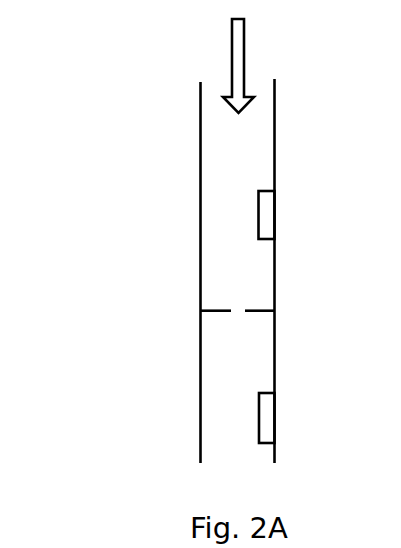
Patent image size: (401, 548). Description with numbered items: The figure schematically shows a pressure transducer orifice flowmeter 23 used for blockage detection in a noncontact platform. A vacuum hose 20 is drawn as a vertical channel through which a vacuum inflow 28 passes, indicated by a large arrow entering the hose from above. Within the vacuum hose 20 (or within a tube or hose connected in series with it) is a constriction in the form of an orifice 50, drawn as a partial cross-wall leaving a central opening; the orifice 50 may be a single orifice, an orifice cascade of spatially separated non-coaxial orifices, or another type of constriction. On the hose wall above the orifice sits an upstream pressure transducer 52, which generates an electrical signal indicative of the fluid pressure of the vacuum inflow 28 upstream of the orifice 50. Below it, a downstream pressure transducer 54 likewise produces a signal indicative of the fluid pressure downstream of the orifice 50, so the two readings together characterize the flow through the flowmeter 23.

The vacuum hose 20 is at (200, 179).
The pressure transducer orifice flowmeter 23 is at (120, 232).
The vacuum inflow 28 is at (232, 47).
The orifice 50 is at (242, 311).
The upstream pressure transducer 52 is at (276, 211).
The downstream pressure transducer 54 is at (276, 419).